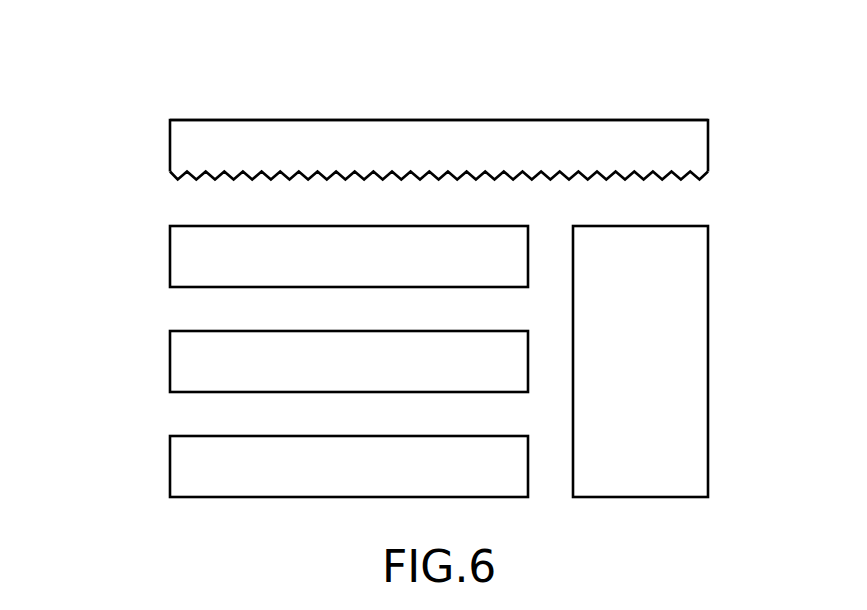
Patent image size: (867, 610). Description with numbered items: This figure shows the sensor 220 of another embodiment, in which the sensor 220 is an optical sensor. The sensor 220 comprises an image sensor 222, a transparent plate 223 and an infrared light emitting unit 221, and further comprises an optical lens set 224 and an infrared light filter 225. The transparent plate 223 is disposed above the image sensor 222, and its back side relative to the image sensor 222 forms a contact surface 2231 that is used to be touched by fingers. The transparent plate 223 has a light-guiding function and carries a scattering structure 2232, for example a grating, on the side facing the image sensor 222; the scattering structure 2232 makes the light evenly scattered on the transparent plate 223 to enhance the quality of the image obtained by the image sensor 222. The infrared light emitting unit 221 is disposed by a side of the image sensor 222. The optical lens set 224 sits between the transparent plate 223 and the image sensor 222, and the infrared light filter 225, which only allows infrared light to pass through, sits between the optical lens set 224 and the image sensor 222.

The sensor 220 is at (123, 36).
The infrared light emitting unit 221 is at (699, 340).
The image sensor 222 is at (178, 465).
The transparent plate 223 is at (178, 144).
The contact surface 2231 is at (238, 118).
The scattering structure 2232 is at (653, 178).
The optical lens set 224 is at (178, 255).
The infrared light filter 225 is at (178, 359).